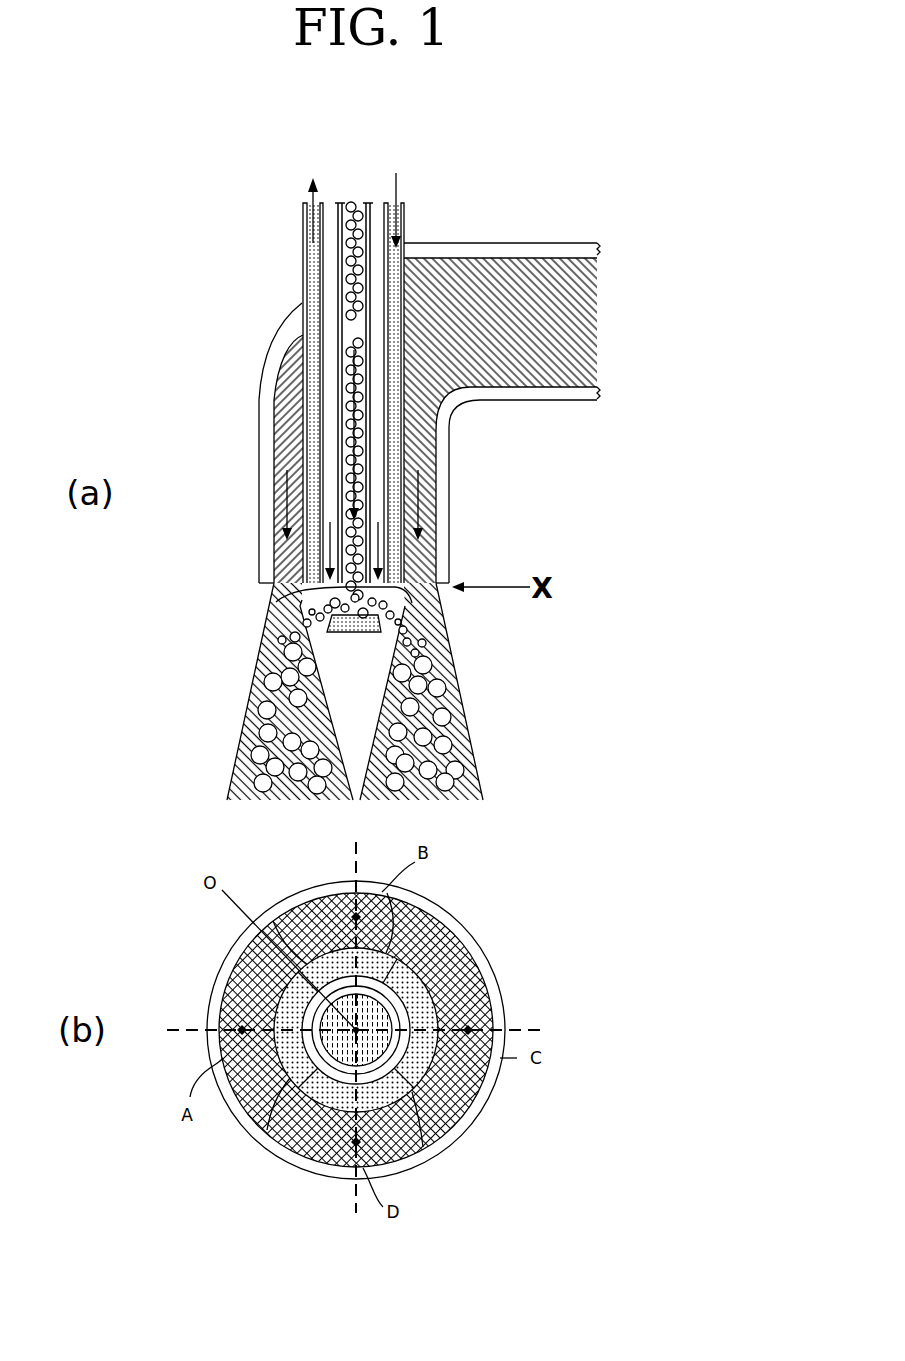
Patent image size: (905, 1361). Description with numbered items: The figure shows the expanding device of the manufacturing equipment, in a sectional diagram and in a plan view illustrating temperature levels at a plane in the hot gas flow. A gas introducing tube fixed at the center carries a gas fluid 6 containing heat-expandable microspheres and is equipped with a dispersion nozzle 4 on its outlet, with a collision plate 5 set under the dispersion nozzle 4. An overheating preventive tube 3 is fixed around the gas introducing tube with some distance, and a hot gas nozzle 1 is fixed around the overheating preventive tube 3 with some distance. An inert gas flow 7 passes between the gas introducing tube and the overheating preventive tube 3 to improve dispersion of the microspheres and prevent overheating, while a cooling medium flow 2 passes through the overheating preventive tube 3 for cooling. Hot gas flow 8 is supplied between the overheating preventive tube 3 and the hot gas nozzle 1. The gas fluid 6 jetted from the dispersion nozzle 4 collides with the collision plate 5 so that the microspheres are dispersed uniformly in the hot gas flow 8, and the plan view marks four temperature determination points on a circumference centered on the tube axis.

The hot gas nozzle 1 is at (265, 537).
The cooling medium flow 2 is at (387, 968).
The overheating preventive tube 3 is at (280, 435).
The dispersion nozzle 4 is at (300, 593).
The collision plate 5 is at (370, 635).
The gas fluid containing heat-expandable microspheres 6 is at (357, 348).
The inert gas flow 7 is at (540, 996).
The hot gas flow 8 is at (528, 320).